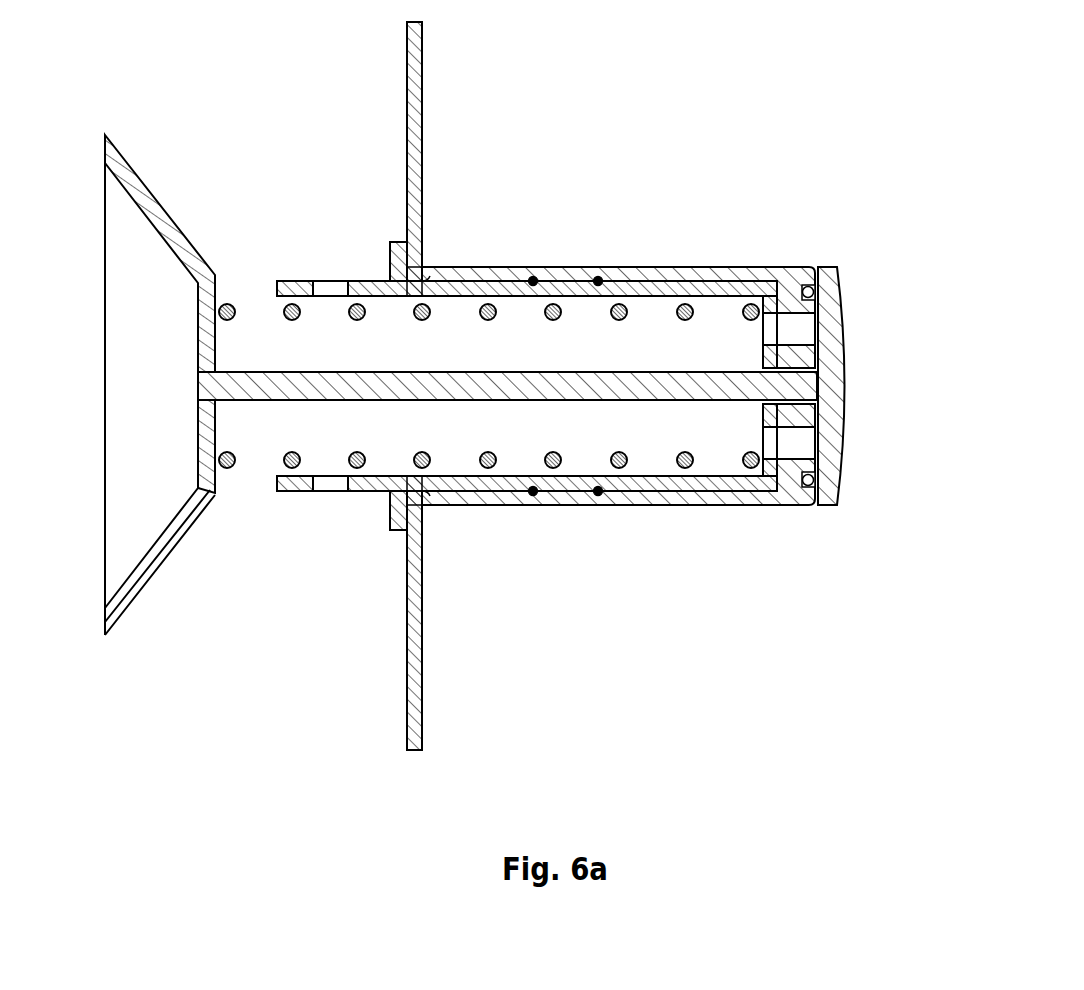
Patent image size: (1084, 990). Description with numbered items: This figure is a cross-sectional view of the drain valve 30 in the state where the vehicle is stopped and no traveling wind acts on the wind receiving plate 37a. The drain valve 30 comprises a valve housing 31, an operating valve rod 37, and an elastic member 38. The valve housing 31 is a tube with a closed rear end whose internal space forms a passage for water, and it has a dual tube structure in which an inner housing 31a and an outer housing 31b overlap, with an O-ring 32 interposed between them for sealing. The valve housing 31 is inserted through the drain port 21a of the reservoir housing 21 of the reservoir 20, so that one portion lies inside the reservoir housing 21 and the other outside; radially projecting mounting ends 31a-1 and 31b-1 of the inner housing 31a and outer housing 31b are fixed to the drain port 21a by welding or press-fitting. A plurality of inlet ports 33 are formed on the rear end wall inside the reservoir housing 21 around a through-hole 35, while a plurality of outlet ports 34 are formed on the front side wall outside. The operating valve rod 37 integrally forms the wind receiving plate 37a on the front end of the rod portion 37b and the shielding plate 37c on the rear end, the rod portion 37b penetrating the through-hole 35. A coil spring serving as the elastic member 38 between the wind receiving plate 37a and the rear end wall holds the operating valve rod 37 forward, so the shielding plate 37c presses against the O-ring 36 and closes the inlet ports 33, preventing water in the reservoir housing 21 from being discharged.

The reservoir 20 is at (414, 151).
The reservoir housing 21 is at (422, 65).
The drain port 21a is at (451, 267).
The drain valve 30 is at (563, 291).
The valve housing 31 is at (563, 312).
The inner housing 31a is at (728, 285).
The mounting end 31a-1 is at (398, 242).
The outer housing 31b is at (652, 267).
The mounting end 31b-1 is at (433, 268).
The O-ring 32 is at (533, 281).
The inlet ports 33 is at (798, 328).
The outlet ports 34 is at (332, 282).
The through-hole 35 is at (817, 388).
The O-ring 36 is at (818, 290).
The operating valve rod 37 is at (482, 488).
The wind receiving plate 37a is at (176, 548).
The rod portion 37b is at (650, 401).
The shielding plate 37c is at (843, 473).
The elastic member 38 is at (295, 325).